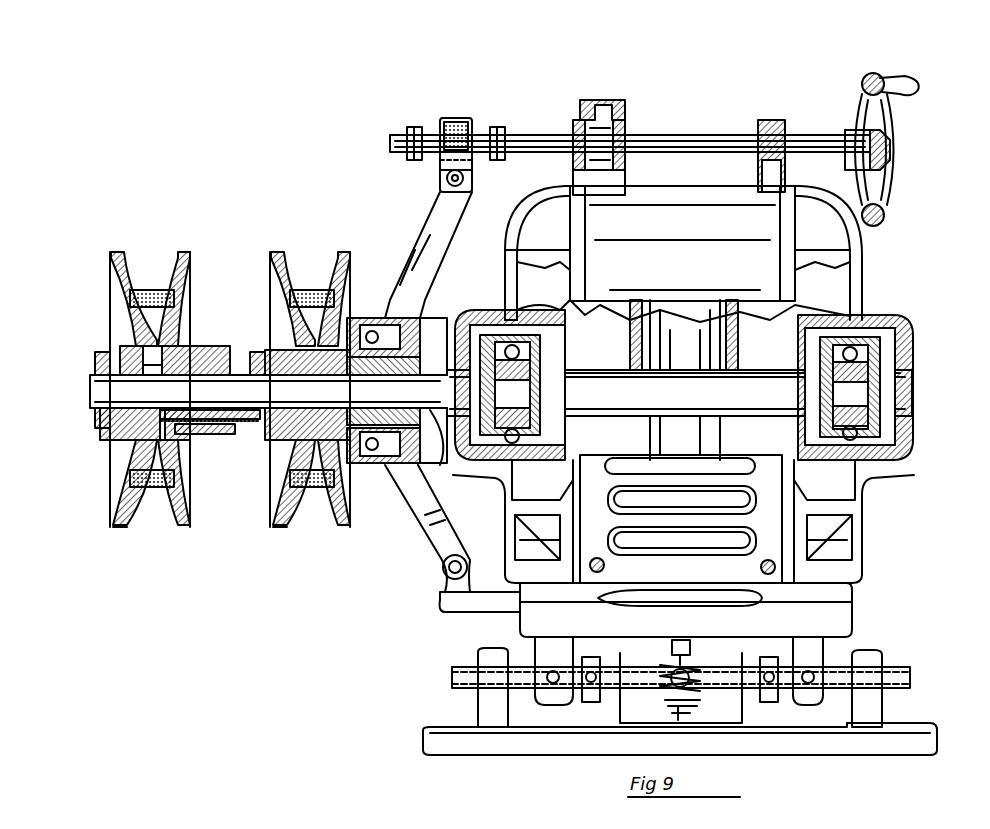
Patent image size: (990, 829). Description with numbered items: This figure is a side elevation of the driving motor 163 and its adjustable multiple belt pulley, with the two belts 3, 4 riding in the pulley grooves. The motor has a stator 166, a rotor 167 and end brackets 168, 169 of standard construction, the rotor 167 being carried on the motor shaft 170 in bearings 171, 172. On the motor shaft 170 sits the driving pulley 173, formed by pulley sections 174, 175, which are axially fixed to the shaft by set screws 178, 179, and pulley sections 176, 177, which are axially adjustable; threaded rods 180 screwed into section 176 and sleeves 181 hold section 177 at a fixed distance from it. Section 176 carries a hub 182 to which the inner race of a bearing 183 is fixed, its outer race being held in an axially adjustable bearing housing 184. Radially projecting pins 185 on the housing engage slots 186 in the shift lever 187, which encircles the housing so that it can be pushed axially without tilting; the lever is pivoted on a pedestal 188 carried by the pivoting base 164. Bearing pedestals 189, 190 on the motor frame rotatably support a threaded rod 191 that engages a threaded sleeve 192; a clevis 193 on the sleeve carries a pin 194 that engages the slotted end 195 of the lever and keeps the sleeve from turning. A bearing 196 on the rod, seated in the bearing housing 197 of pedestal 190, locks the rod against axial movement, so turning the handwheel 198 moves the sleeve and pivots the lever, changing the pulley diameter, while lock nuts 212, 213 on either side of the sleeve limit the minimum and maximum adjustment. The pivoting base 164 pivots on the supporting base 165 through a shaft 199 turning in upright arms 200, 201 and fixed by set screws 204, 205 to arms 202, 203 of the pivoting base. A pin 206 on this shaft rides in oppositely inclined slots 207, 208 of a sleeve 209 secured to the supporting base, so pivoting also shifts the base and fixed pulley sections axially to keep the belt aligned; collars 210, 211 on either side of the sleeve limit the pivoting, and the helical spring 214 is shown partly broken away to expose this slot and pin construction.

The belt 3 is at (312, 290).
The belt 4 is at (152, 290).
The driving motor 163 is at (850, 588).
The pivoting base 164 is at (850, 630).
The supporting base 165 is at (920, 745).
The stator 166 is at (660, 189).
The rotor 167 is at (688, 325).
The end bracket 168 is at (812, 213).
The end bracket 169 is at (538, 200).
The motor shaft 170 is at (632, 376).
The bearing 171 is at (872, 322).
The bearing 172 is at (488, 320).
The driving pulley 173 is at (236, 532).
The pulley section 174 is at (283, 528).
The pulley section 175 is at (124, 528).
The pulley section 176 is at (333, 528).
The pulley section 177 is at (172, 528).
The set screw 178 is at (268, 355).
The set screw 179 is at (100, 356).
The threaded rod 180 is at (308, 440).
The sleeve 181 is at (248, 430).
The hub 182 is at (356, 318).
The bearing 183 is at (372, 318).
The bearing housing 184 is at (372, 465).
The pin 185 is at (378, 383).
The slot 186 is at (438, 445).
The shift lever 187 is at (430, 240).
The pedestal 188 is at (440, 584).
The bearing pedestal 189 is at (775, 122).
The bearing pedestal 190 is at (626, 115).
The threaded rod 191 is at (690, 145).
The threaded sleeve 192 is at (460, 120).
The clevis 193 is at (472, 168).
The pin 194 is at (440, 176).
The slotted end 195 is at (460, 186).
The bearing 196 is at (605, 102).
The bearing housing 197 is at (576, 135).
The handwheel 198 is at (885, 213).
The shaft 199 is at (900, 680).
The upright arm 200 is at (872, 710).
The upright arm 201 is at (490, 705).
The arm 202 is at (826, 655).
The arm 203 is at (545, 650).
The set screw 204 is at (805, 684).
The set screw 205 is at (555, 683).
The pin 206 is at (666, 702).
The slot 207 is at (690, 678).
The slot 208 is at (660, 677).
The sleeve 209 is at (688, 710).
The collar 210 is at (768, 658).
The collar 211 is at (592, 658).
The lock nut 212 is at (500, 138).
The lock nut 213 is at (414, 127).
The helical spring 214 is at (690, 645).